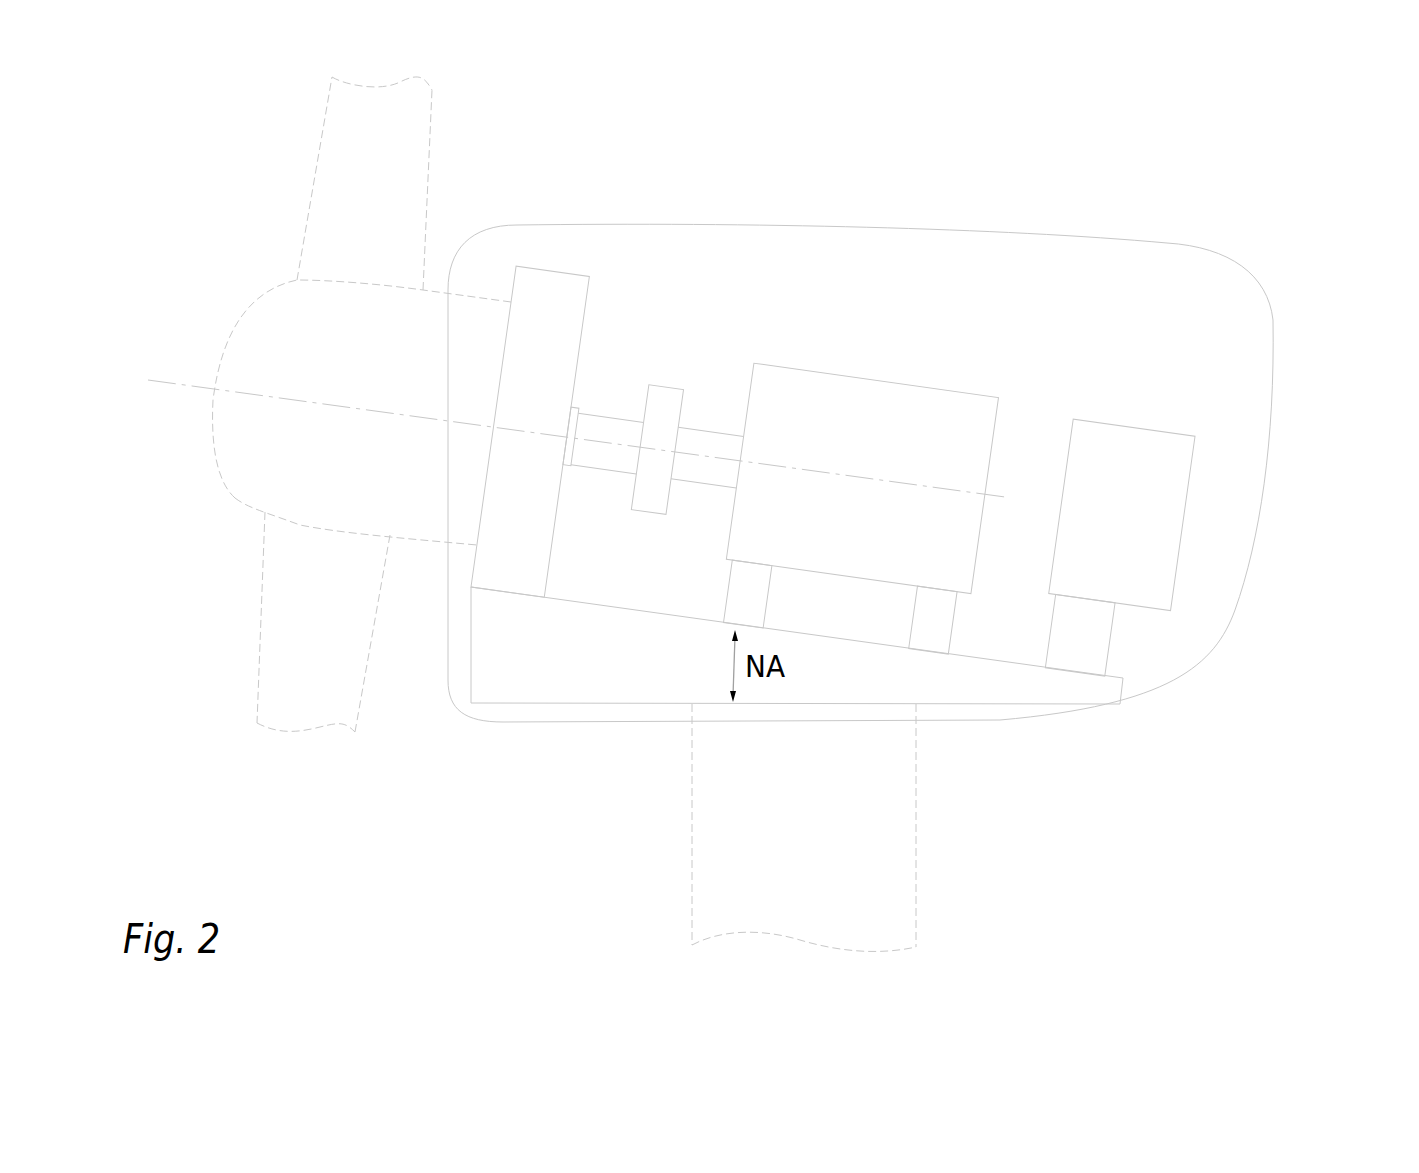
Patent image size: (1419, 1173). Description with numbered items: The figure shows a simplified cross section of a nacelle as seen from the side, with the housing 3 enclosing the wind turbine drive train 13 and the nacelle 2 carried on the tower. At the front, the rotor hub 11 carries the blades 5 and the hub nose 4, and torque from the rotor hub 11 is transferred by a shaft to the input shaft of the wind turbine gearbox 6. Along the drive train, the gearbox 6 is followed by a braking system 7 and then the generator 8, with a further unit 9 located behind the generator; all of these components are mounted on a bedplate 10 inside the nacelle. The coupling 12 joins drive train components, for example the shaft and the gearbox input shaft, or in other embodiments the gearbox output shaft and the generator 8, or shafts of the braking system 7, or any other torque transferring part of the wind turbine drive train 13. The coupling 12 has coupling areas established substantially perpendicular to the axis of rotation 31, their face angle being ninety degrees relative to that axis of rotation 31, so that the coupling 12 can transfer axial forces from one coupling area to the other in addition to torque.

The tower 2 is at (833, 877).
The nacelle 3 is at (1312, 260).
The hub 4 is at (273, 357).
The rotor blade 5 is at (392, 175).
The gearbox 6 is at (552, 306).
The braking system 7 is at (670, 407).
The generator 8 is at (827, 423).
The converter / transformer 9 is at (1140, 480).
The bedplate 10 is at (1075, 690).
The rotor hub 11 is at (320, 448).
The coupling 12 is at (573, 448).
The wind turbine drive train 13 is at (759, 446).
The axis of rotation 31 is at (180, 378).